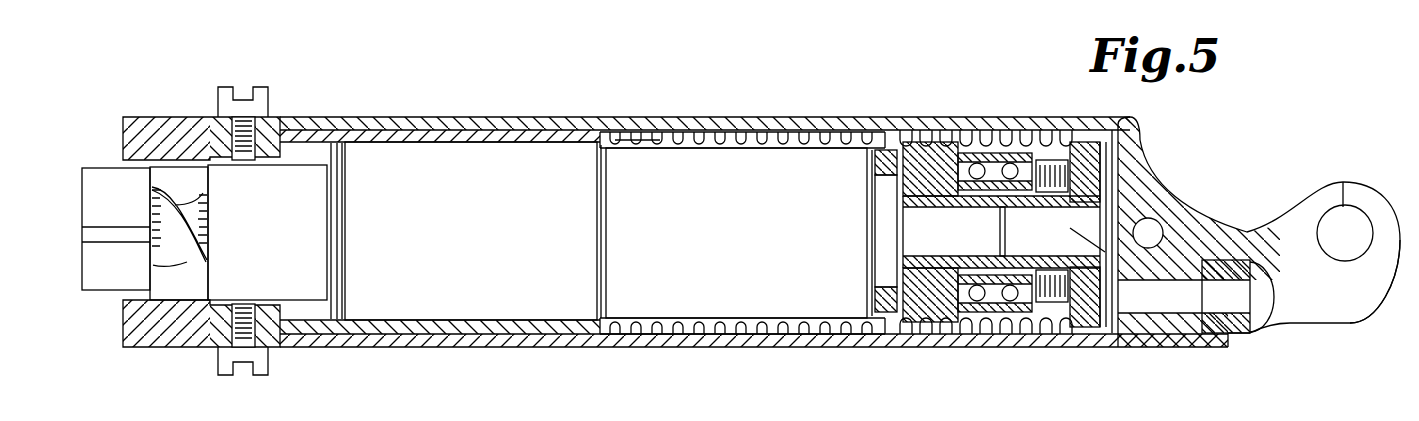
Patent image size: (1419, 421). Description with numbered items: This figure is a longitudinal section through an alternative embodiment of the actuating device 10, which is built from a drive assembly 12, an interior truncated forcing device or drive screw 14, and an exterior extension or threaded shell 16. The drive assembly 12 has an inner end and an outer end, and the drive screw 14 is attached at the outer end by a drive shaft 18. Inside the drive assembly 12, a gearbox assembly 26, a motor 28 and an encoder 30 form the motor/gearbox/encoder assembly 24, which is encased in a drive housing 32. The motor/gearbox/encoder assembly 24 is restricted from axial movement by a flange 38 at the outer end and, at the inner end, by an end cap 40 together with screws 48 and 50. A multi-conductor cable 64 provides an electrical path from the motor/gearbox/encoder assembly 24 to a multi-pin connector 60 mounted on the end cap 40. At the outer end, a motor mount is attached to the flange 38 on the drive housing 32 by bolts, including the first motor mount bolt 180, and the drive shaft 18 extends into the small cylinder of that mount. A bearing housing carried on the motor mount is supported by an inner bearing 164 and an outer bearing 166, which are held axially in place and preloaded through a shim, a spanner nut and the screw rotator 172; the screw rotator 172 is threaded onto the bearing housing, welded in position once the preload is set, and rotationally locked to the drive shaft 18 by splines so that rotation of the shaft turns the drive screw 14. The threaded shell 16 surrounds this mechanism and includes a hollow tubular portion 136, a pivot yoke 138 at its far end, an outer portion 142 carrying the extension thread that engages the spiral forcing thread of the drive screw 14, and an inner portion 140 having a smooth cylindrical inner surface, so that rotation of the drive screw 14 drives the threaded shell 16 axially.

The actuating device 10 is at (1373, 318).
The drive assembly 12 is at (520, 110).
The drive screw 14 is at (957, 103).
The threaded shell 16 is at (1035, 113).
The drive shaft 18 is at (1137, 280).
The motor/gearbox/encoder assembly 24 is at (633, 110).
The gearbox assembly 26 is at (752, 261).
The motor 28 is at (472, 241).
The encoder 30 is at (285, 252).
The drive housing 32 is at (623, 135).
The flange 38 is at (887, 127).
The end cap 40 is at (180, 138).
The screw 48 is at (262, 360).
The screw 50 is at (262, 93).
The multi-pin connector 60 is at (110, 180).
The multi-conductor cable 64 is at (167, 250).
The hollow tubular portion 136 is at (877, 365).
The pivot yoke 138 is at (1317, 307).
The inner portion 140 is at (503, 340).
The outer portion 142 is at (970, 342).
The inner bearing 164 is at (947, 150).
The outer bearing 166 is at (992, 137).
The screw rotator 172 is at (1067, 192).
The first motor mount bolt 180 is at (892, 140).